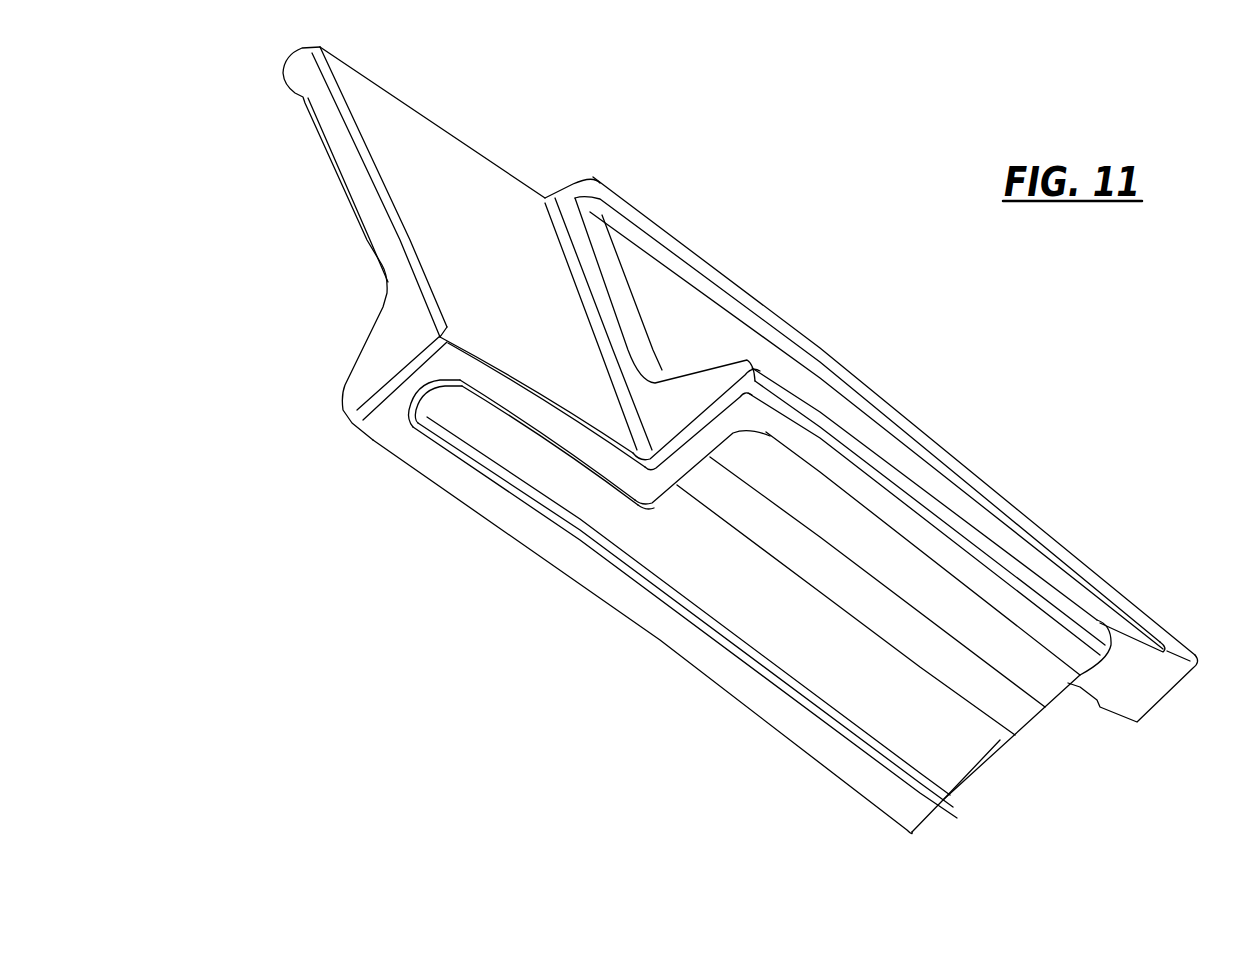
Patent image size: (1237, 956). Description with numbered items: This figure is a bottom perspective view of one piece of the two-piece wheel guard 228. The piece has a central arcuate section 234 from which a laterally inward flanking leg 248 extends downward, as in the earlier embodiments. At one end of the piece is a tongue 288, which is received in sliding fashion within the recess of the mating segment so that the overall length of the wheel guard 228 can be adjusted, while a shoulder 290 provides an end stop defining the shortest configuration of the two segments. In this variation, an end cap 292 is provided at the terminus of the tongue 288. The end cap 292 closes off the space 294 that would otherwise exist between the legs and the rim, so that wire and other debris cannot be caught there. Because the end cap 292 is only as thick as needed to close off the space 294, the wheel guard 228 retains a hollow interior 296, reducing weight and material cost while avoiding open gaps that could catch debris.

The wheel guard 228 is at (988, 366).
The central arcuate section 234 is at (357, 177).
The laterally inward flanking leg 248 is at (735, 582).
The tongue 288 is at (447, 169).
The shoulder 290 is at (565, 215).
The end cap 292 is at (393, 347).
The space 294 is at (472, 473).
The hollow interior 296 is at (982, 700).